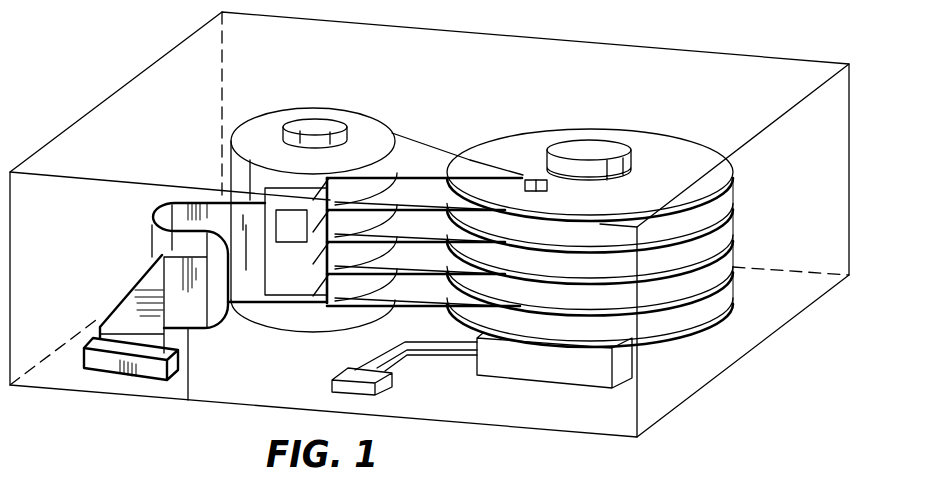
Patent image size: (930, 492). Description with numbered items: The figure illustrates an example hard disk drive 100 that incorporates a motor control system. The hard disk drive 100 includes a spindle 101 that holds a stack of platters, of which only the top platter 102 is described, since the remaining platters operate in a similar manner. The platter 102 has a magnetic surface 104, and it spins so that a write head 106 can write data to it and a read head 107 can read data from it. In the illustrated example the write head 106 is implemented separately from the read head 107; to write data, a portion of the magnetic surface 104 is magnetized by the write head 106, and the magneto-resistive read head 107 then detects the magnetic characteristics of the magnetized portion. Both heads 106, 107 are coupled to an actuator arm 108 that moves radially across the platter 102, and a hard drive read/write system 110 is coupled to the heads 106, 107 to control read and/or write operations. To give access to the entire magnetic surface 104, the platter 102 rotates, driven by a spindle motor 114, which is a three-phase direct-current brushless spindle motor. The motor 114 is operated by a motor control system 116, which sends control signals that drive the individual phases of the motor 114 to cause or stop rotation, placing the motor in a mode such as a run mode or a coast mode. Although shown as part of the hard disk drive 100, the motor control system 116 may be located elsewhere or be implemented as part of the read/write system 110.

The hard disk drive 100 is at (95, 53).
The spindle 101 is at (588, 147).
The platter 102 is at (665, 133).
The magnetic surface 104 is at (722, 174).
The write head 106 is at (541, 179).
The read head 107 is at (534, 178).
The actuator arm 108 is at (410, 150).
The hard drive read/write system 110 is at (287, 212).
The spindle motor 114 is at (525, 372).
The motor control system 116 is at (347, 370).